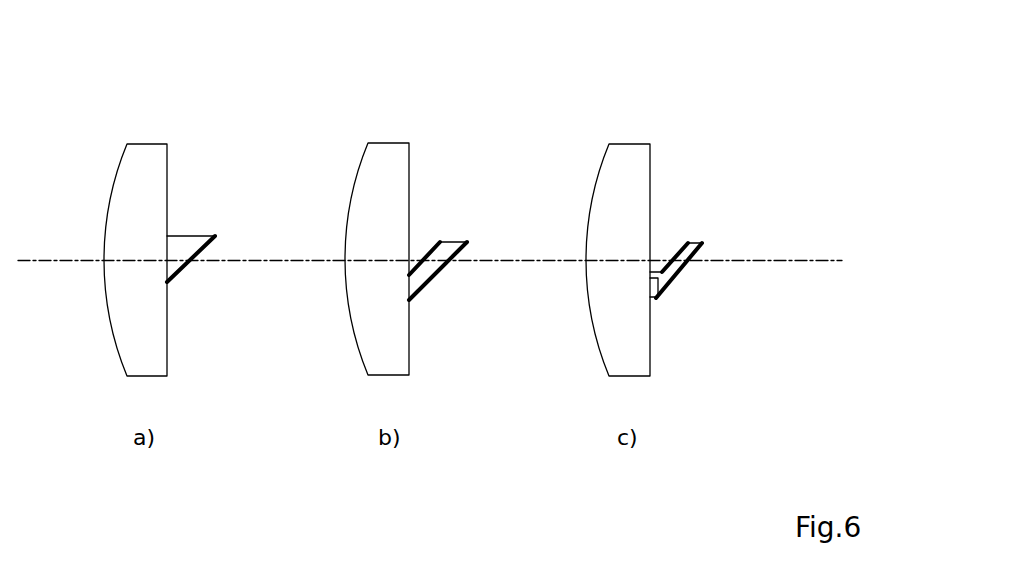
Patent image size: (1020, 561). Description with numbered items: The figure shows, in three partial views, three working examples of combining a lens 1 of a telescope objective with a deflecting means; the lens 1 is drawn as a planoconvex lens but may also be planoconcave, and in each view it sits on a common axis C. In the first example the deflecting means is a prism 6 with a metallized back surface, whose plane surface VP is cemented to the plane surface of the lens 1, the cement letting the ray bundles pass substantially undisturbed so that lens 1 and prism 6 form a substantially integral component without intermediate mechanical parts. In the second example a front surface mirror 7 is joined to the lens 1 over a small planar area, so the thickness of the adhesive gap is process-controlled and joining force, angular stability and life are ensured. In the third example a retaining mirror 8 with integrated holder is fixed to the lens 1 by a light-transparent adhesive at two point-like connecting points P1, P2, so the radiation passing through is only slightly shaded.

The lens 1 is at (148, 158).
The prism 6 is at (180, 241).
The front surface mirror 7 is at (447, 248).
The retaining mirror 8 is at (695, 248).
The plane surface of the prism VP is at (181, 294).
The first connecting point P1 is at (640, 308).
The second connecting point P2 is at (636, 281).
The optical axis C is at (767, 262).